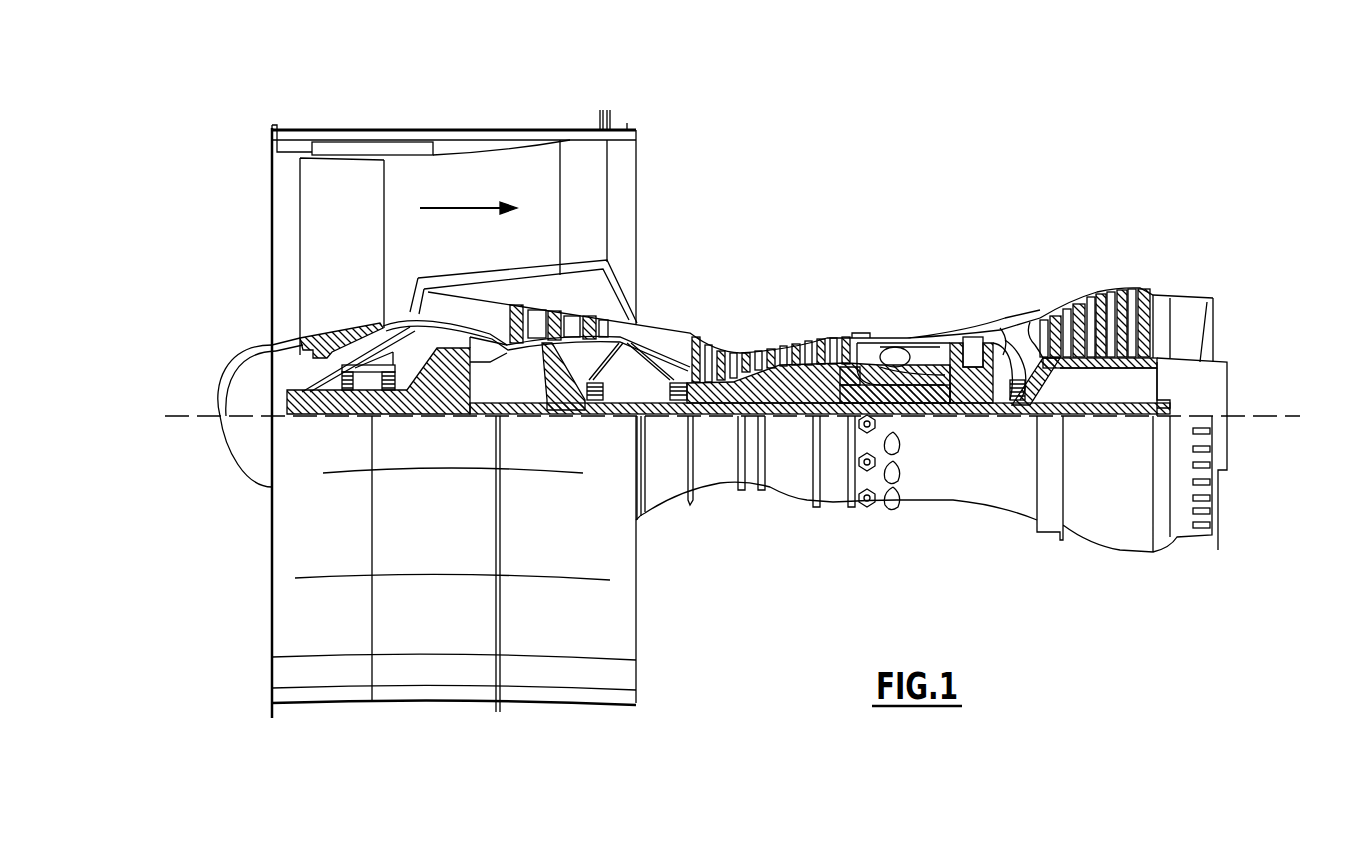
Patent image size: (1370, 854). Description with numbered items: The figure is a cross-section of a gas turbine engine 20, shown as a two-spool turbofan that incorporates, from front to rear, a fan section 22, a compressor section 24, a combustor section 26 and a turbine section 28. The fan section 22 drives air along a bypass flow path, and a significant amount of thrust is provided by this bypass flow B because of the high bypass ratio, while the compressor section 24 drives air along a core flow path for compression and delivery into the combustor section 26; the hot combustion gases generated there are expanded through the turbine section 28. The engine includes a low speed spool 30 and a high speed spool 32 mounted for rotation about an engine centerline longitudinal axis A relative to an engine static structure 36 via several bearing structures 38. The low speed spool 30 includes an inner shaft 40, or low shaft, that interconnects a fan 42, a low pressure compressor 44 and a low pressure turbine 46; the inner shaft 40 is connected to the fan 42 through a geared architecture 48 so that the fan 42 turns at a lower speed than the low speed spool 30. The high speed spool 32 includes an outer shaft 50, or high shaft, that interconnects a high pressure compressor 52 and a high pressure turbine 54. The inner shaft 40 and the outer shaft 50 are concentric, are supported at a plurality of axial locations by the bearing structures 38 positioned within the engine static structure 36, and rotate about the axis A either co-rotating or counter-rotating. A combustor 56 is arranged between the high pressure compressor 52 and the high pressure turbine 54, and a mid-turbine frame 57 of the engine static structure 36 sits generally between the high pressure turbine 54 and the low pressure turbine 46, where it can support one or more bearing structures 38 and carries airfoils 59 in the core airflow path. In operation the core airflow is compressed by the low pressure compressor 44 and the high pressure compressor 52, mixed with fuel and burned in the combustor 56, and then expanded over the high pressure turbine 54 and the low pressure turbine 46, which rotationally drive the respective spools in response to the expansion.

The gas turbine engine 20 is at (753, 387).
The fan section 22 is at (427, 387).
The compressor section 24 is at (666, 413).
The combustor section 26 is at (940, 381).
The turbine section 28 is at (1088, 382).
The low speed spool 30 is at (793, 428).
The high speed spool 32 is at (833, 378).
The engine static structure 36 is at (833, 515).
The bearing structures 38 is at (373, 388).
The inner shaft 40 is at (652, 420).
The fan 42 is at (357, 260).
The low pressure compressor 44 is at (570, 318).
The low pressure turbine 46 is at (1102, 310).
The geared architecture 48 is at (462, 398).
The outer shaft 50 is at (922, 405).
The high pressure compressor 52 is at (768, 378).
The high pressure turbine 54 is at (973, 345).
The combustor 56 is at (908, 357).
The mid-turbine frame 57 is at (1020, 320).
The airfoils 59 is at (1042, 382).
The engine centerline longitudinal axis A is at (1298, 416).
The bypass flow B is at (455, 210).